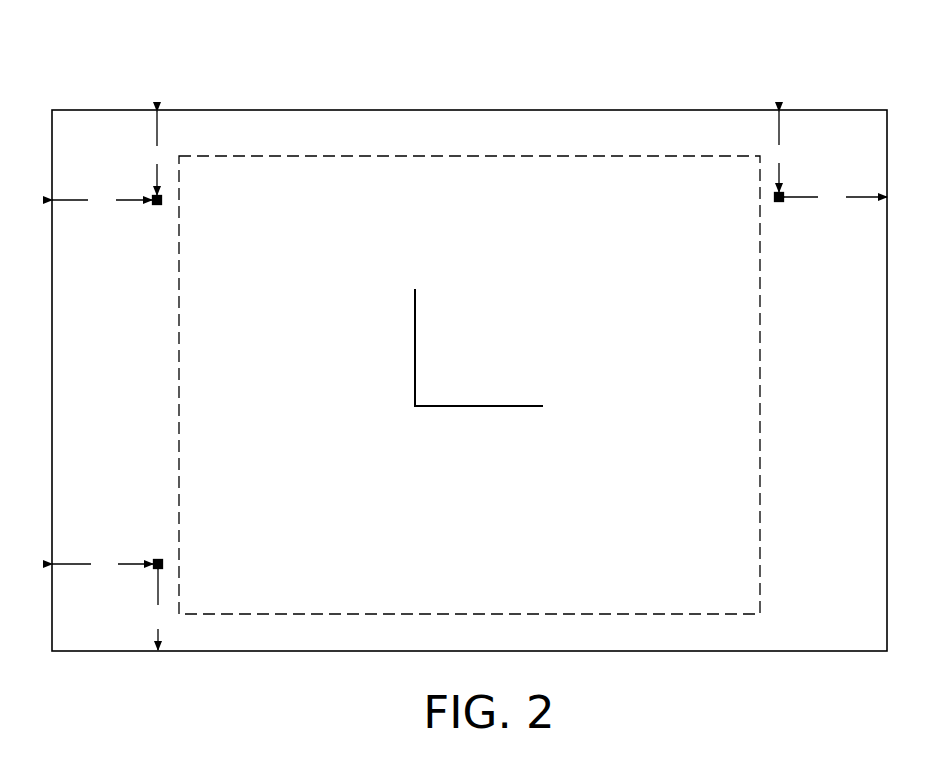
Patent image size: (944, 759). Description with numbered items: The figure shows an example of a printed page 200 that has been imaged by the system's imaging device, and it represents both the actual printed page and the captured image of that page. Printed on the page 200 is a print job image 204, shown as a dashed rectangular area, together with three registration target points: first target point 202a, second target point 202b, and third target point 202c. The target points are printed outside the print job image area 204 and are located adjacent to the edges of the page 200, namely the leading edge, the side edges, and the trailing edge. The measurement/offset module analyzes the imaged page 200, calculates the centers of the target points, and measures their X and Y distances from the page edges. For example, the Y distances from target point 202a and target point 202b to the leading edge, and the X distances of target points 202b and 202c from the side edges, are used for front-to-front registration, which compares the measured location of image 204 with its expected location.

The printed page 200 is at (130, 71).
The target point 1 202a is at (155, 208).
The target point 2 202b is at (782, 204).
The target point 3 202c is at (157, 558).
The print job image 204 is at (761, 511).